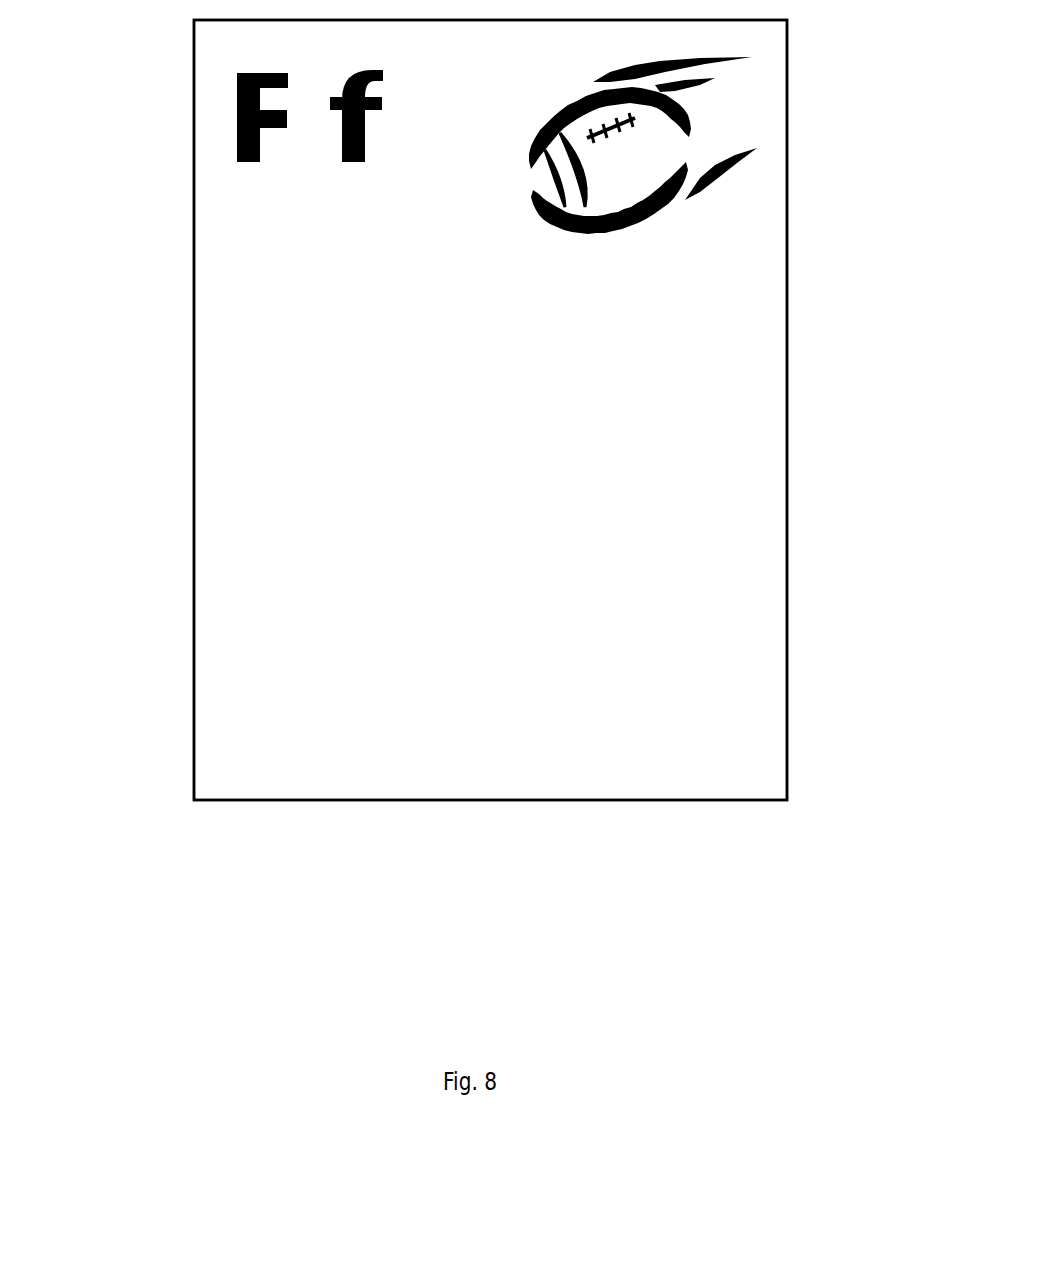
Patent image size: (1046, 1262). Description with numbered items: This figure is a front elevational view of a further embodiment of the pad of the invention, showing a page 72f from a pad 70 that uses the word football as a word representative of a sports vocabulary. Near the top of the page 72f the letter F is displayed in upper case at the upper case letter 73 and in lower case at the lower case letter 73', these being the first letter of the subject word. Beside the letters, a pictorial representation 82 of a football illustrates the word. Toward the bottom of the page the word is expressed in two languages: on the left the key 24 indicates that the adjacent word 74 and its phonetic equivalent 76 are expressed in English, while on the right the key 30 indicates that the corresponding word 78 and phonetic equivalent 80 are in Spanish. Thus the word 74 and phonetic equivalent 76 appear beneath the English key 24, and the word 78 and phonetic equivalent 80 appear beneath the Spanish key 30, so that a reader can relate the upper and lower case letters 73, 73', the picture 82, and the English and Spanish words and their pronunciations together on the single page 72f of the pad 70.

The pad 70 is at (186, 423).
The page 72f is at (733, 417).
The upper case letter 73 is at (262, 170).
The lower case letter 73' is at (356, 169).
The pictorial representation 82 is at (621, 236).
The key 24 is at (222, 639).
The phonetic equivalent 76 is at (222, 679).
The word 74 is at (222, 745).
The key 30 is at (758, 644).
The phonetic equivalent 80 is at (758, 683).
The word 78 is at (758, 746).